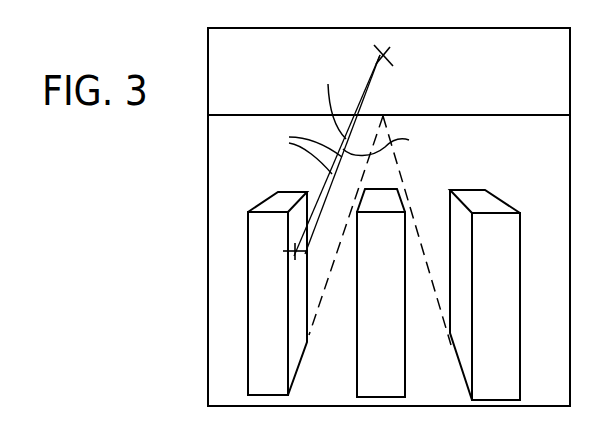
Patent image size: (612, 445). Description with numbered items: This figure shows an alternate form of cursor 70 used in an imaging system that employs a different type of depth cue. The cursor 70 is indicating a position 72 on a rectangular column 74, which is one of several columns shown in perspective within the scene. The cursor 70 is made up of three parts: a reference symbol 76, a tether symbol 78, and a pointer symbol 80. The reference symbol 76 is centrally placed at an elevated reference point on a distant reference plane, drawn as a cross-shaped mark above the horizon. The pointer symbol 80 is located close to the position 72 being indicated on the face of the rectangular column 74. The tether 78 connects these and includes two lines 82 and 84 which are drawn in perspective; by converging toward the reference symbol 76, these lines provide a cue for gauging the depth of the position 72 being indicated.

The cursor 70 is at (368, 93).
The position 72 is at (294, 256).
The rectangular column 74 is at (279, 376).
The reference symbol 76 is at (390, 56).
The tether symbol 78 is at (303, 151).
The pointer symbol 80 is at (285, 249).
The line 82 is at (389, 143).
The line 84 is at (330, 99).